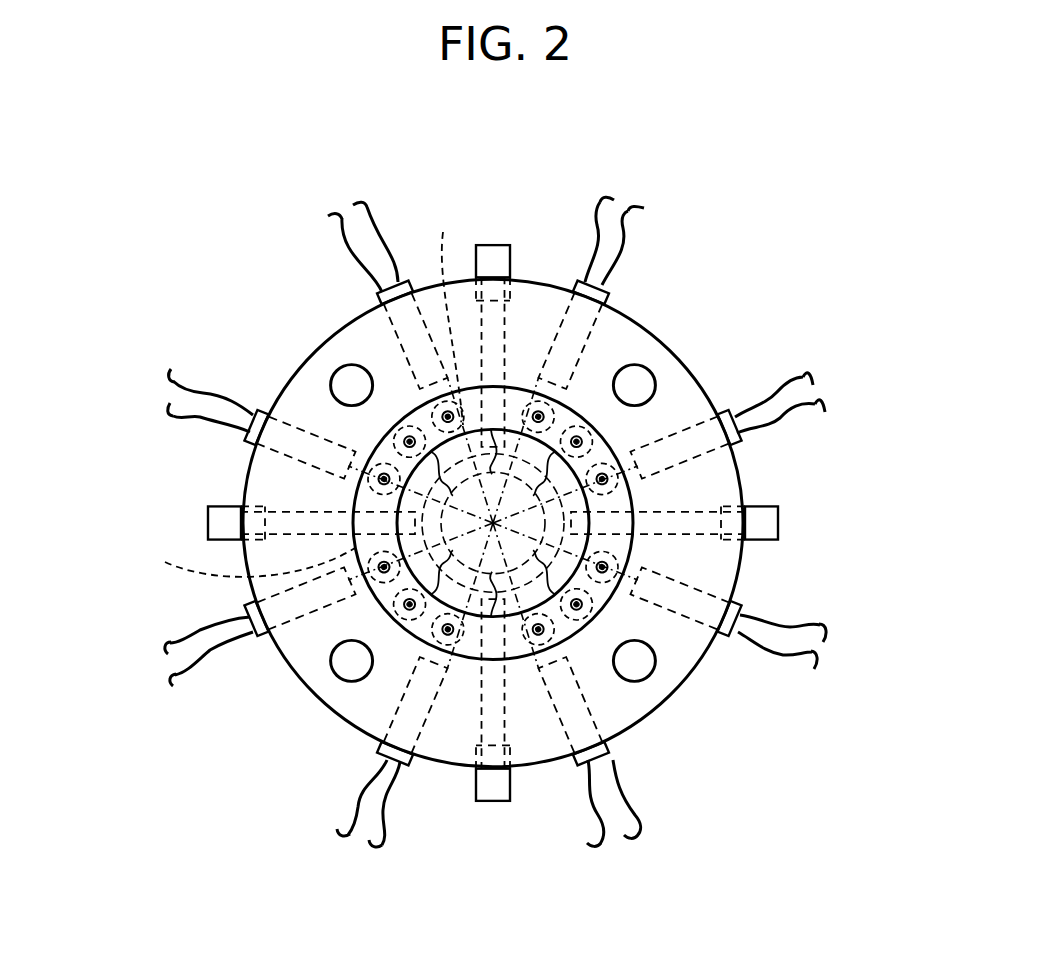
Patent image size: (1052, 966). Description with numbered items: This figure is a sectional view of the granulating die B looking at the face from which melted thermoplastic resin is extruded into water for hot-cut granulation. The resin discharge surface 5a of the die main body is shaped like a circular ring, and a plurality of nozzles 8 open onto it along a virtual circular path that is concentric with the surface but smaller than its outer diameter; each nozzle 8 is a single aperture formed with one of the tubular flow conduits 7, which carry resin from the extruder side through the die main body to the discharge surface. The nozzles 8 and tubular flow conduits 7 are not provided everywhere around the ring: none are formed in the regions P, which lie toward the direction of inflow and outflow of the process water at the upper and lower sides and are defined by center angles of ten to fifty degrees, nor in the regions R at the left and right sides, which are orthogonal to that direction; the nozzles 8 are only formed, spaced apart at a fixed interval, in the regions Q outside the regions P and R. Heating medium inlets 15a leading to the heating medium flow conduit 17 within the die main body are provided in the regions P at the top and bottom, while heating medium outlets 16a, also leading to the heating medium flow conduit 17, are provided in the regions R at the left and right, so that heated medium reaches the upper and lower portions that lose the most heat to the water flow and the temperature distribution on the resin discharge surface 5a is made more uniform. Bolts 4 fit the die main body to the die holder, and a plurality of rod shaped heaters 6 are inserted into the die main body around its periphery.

The granulating die B is at (753, 278).
The bolts 4 is at (330, 383).
The resin discharge surface 5a is at (607, 443).
The rod shaped heaters 6 is at (372, 258).
The tubular flow conduits 7 is at (450, 311).
The nozzles 8 is at (443, 418).
The heating medium inlets 15a is at (492, 246).
The heating medium outlets 16a is at (778, 523).
The heating medium flow conduit 17 is at (242, 562).
The regions P is at (491, 524).
The regions Q is at (492, 523).
The regions R is at (491, 523).